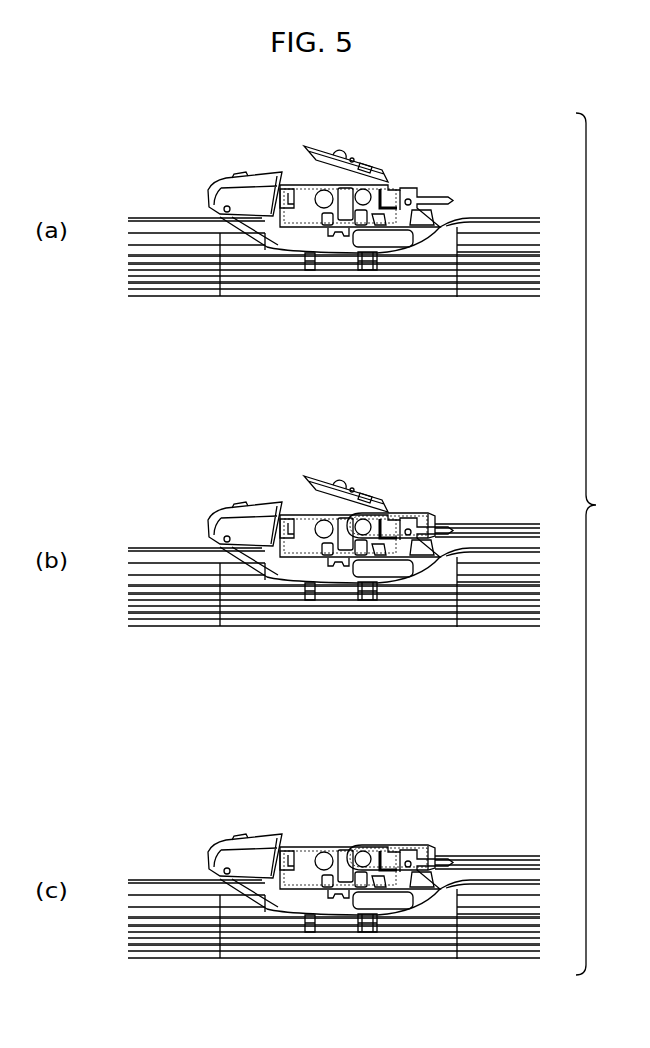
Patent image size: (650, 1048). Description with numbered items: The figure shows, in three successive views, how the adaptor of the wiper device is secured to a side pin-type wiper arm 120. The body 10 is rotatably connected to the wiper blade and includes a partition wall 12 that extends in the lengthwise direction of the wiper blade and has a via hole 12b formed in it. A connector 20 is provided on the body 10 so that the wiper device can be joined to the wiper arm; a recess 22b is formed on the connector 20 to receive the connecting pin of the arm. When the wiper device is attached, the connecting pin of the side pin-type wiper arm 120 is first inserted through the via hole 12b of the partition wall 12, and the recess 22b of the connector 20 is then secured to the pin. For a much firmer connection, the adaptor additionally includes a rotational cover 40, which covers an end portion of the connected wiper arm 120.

The body 10 is at (279, 234).
The partition wall 12 is at (308, 184).
The via hole 12b is at (358, 271).
The connector 20 is at (356, 146).
The recess 22b is at (378, 168).
The rotational cover 40 is at (208, 188).
The side pin-type wiper arm 120 is at (516, 522).